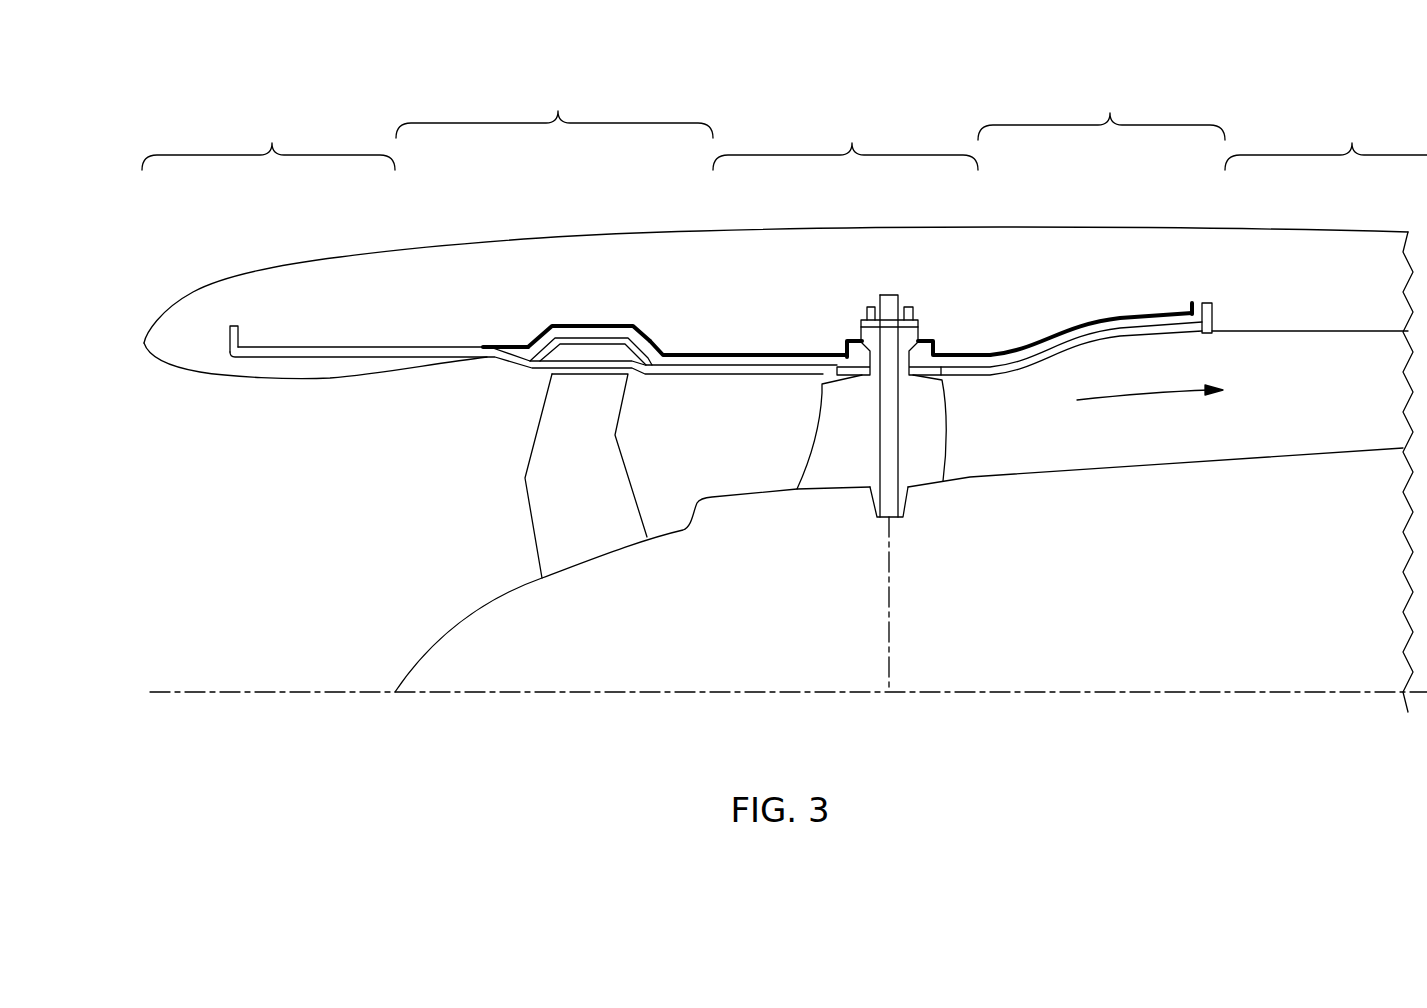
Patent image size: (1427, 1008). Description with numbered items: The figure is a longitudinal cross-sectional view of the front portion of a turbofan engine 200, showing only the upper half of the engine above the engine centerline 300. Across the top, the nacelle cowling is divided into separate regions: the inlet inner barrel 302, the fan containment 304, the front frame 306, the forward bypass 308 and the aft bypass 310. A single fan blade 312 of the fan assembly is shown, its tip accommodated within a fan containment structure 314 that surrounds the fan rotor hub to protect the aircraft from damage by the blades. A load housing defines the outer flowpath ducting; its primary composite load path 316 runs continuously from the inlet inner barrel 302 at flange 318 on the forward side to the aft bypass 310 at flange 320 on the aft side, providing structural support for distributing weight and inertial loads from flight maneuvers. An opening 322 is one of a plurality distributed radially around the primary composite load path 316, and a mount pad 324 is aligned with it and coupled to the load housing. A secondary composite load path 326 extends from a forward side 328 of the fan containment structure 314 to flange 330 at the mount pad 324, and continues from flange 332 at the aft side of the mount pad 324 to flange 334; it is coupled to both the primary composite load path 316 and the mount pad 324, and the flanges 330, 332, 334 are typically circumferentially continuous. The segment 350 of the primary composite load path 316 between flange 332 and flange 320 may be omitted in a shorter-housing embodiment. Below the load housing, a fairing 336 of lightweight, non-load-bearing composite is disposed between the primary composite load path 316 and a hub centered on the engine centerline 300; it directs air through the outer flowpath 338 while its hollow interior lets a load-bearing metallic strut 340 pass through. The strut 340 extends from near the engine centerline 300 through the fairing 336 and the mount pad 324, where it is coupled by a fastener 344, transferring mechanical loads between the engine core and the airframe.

The gas turbine engine 200 is at (143, 528).
The engine centerline 300 is at (200, 692).
The inlet inner barrel 302 is at (268, 141).
The fan containment 304 is at (554, 109).
The front frame 306 is at (845, 141).
The forward bypass 308 is at (1101, 111).
The aft bypass 310 is at (1326, 141).
The fan blade 312 is at (532, 501).
The fan containment structure 314 is at (652, 340).
The primary composite load path 316 is at (388, 346).
The flange 318 is at (240, 335).
The flange 320 is at (1213, 316).
The opening 322 is at (820, 385).
The mount pad 324 is at (861, 340).
The secondary composite load path 326 is at (590, 325).
The forward side 328 is at (508, 345).
The flange 330 is at (845, 340).
The flange 332 is at (934, 342).
The flange 334 is at (1191, 302).
The fairing 336 is at (940, 445).
The outer flowpath 338 is at (1147, 394).
The load-bearing strut 340 is at (890, 413).
The fastener 344 is at (920, 323).
The segment 350 is at (1107, 332).